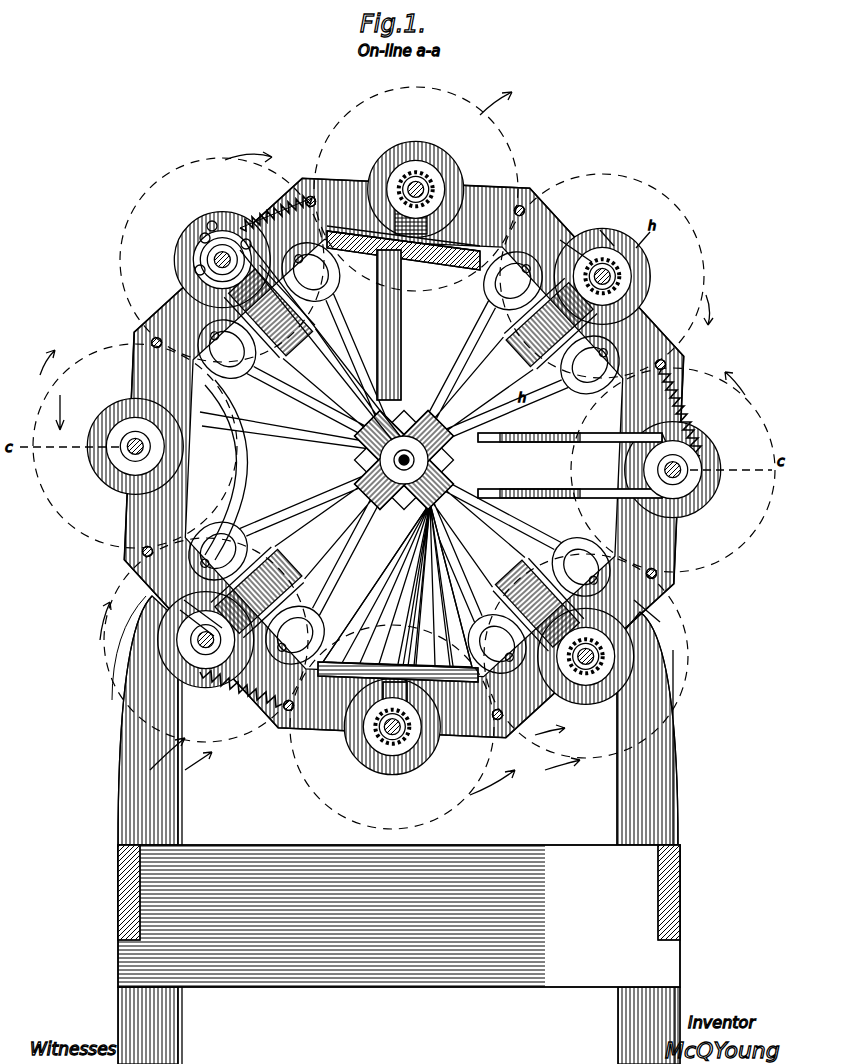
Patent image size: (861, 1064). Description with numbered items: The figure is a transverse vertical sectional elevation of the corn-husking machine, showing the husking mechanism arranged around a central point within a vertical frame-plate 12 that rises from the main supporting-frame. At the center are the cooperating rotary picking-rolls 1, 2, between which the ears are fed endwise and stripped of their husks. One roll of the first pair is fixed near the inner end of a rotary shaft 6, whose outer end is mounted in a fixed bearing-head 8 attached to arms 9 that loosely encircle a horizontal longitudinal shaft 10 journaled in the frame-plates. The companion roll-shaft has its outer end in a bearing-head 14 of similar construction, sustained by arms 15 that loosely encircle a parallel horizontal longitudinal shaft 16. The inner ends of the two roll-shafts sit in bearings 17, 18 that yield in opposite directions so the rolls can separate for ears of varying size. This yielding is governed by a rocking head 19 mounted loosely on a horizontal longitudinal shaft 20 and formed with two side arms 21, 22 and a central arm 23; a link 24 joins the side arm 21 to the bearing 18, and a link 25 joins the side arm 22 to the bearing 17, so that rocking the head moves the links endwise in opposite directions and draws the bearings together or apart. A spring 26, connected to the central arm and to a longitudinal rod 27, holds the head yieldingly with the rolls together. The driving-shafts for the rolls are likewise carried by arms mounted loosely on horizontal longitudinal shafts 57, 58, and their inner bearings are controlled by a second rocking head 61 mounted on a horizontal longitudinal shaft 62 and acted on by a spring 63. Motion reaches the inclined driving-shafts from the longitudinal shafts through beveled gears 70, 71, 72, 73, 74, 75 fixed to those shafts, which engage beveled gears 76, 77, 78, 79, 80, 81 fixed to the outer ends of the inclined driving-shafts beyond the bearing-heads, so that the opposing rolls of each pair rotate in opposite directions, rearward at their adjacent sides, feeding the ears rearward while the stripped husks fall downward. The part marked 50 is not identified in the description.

The rotary picking-roll 1 is at (397, 408).
The rotary picking-roll 2 is at (436, 412).
The rotary shaft 6 is at (292, 530).
The fixed bearing-head 8 is at (250, 692).
The arms 9 is at (190, 642).
The horizontal longitudinal shaft 10 is at (208, 668).
The vertical frame-plate 12 is at (170, 430).
The bearing-head 14 is at (578, 242).
The arms 15 is at (603, 236).
The horizontal longitudinal shaft 16 is at (618, 275).
The bearing 17 is at (400, 385).
The bearing 18 is at (392, 528).
The rocking head 19 is at (200, 240).
The horizontal longitudinal shaft 20 is at (222, 235).
The side arm 21 is at (200, 268).
The side arm 22 is at (252, 222).
The central arm 23 is at (208, 222).
The link 24 is at (232, 436).
The link 25 is at (348, 354).
The spring 26 is at (284, 210).
The longitudinal rod 27 is at (311, 198).
The right standard 50 is at (212, 690).
The horizontal longitudinal shaft 57 is at (428, 183).
The horizontal longitudinal shaft 58 is at (380, 730).
The rocking head 61 is at (690, 478).
The horizontal longitudinal shaft 62 is at (690, 464).
The spring 63 is at (688, 414).
The beveled gear 70 is at (618, 290).
The beveled gear 71 is at (198, 640).
The beveled gear 72 is at (200, 258).
The beveled gear 73 is at (258, 860).
The beveled gear 74 is at (432, 232).
The beveled gear 75 is at (605, 650).
The beveled gear 76 is at (600, 300).
The beveled gear 77 is at (190, 612).
The beveled gear 78 is at (642, 614).
The beveled gear 79 is at (188, 282).
The beveled gear 80 is at (519, 208).
The beveled gear 81 is at (310, 726).